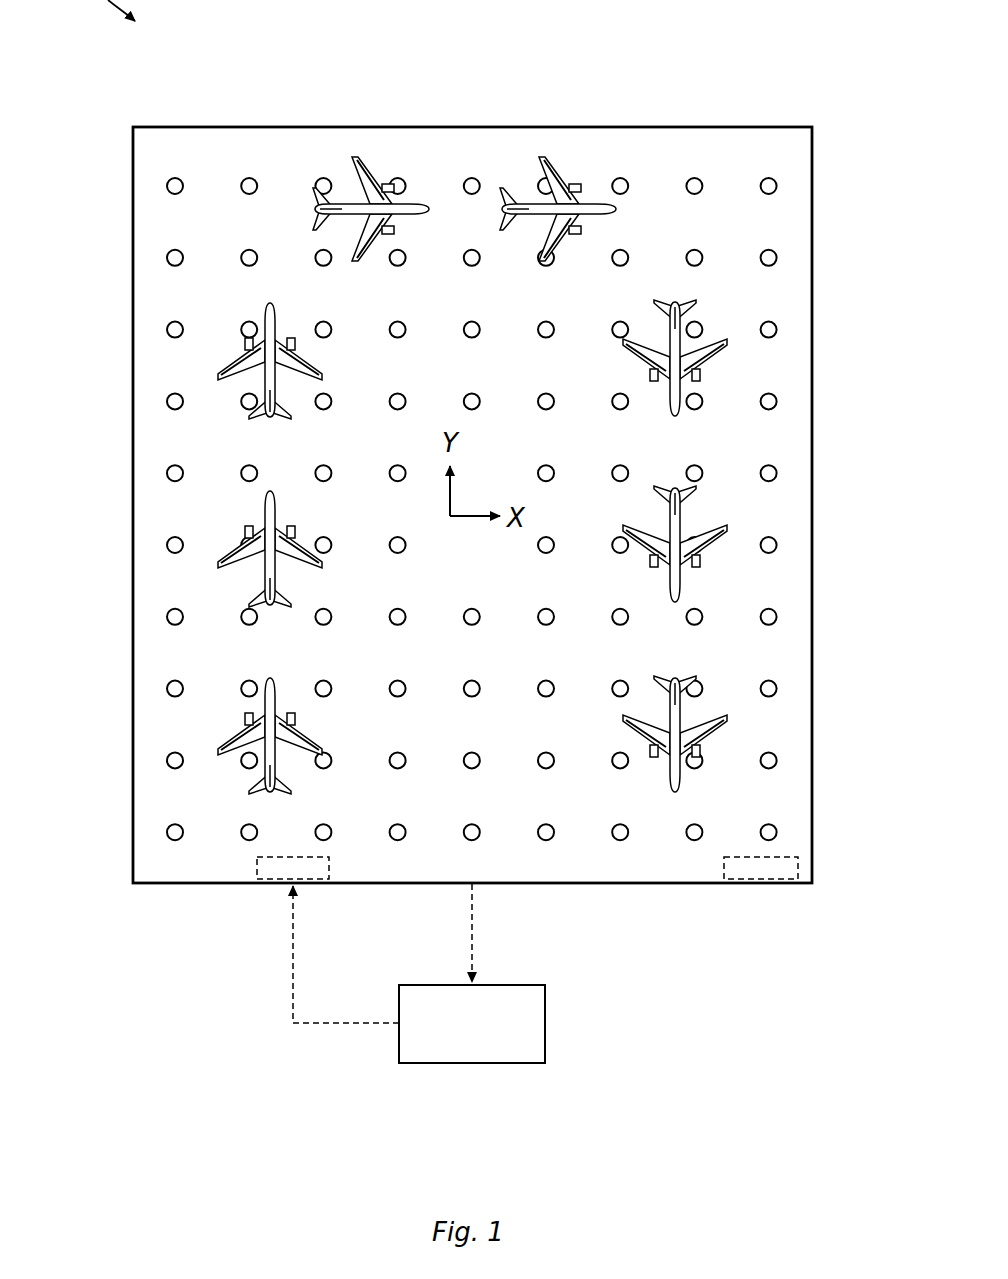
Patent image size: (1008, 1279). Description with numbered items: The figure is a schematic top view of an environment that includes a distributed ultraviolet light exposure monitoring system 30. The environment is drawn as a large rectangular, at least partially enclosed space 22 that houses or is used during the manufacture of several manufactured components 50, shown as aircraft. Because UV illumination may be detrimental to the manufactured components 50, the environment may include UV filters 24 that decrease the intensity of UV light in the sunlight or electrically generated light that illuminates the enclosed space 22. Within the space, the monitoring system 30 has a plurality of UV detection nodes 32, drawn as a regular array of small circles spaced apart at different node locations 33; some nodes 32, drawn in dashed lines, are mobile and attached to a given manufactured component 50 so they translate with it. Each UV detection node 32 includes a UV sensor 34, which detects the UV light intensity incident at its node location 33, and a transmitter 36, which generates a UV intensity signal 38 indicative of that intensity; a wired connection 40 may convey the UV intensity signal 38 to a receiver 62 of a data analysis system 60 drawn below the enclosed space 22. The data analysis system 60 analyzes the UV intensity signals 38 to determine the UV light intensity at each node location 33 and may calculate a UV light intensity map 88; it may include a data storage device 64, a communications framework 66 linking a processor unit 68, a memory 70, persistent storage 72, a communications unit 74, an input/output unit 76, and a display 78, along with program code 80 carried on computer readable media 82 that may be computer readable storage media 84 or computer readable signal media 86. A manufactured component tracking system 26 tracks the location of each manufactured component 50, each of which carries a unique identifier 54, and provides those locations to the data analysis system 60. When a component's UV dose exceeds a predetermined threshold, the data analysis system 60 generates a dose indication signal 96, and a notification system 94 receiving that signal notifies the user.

The distributed ultraviolet light exposure monitoring system 30 is at (149, 75).
The enclosed space 22 is at (800, 806).
The UV filter 24 is at (800, 721).
The manufactured component tracking system 26 is at (758, 879).
The UV detection node 32 is at (178, 176).
The node location 33 is at (242, 196).
The UV sensor 34 is at (466, 337).
The transmitter 36 is at (478, 336).
The UV intensity signal 38 is at (474, 924).
The wired connection 40 is at (467, 907).
The manufactured component 50 is at (270, 488).
The unique identifier 54 is at (262, 518).
The data analysis system 60 is at (399, 981).
The receiver 62 is at (400, 1032).
The data storage device 64 is at (398, 1040).
The communications framework 66 is at (400, 1062).
The processor unit 68 is at (416, 1062).
The memory 70 is at (432, 1062).
The persistent storage 72 is at (448, 1062).
The communications unit 74 is at (470, 1062).
The input/output unit 76 is at (490, 1062).
The display 78 is at (508, 1062).
The program code 80 is at (529, 1062).
The computer readable media 82 is at (544, 1060).
The computer readable storage media 84 is at (544, 1030).
The computer readable signal media 86 is at (544, 998).
The UV light intensity map 88 is at (528, 992).
The notification system 94 is at (256, 865).
The dose indication signal 96 is at (292, 940).